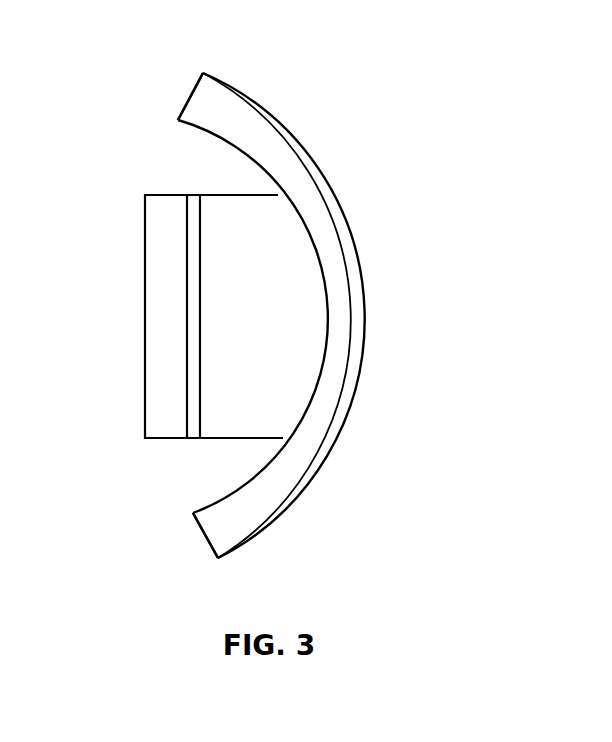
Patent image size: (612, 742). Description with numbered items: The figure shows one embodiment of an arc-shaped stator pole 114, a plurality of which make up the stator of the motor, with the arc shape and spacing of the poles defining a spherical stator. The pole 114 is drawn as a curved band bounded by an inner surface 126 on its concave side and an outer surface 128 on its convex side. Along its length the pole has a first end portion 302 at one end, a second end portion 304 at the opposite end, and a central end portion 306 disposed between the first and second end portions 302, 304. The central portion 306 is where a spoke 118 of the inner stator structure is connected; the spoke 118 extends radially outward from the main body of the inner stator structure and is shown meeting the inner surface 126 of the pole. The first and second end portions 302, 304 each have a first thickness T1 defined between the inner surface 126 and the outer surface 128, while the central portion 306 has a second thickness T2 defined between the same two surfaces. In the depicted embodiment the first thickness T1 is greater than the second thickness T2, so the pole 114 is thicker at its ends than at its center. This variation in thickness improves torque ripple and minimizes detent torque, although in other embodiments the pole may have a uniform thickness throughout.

The arc-shaped stator pole 114 is at (317, 115).
The spoke 118 is at (325, 320).
The inner surface 126 is at (303, 408).
The outer surface 128 is at (353, 386).
The first end portion 302 is at (240, 120).
The second end portion 304 is at (242, 522).
The central end portion 306 is at (340, 320).
The first thickness T1 is at (177, 63).
The second thickness T2 is at (366, 320).